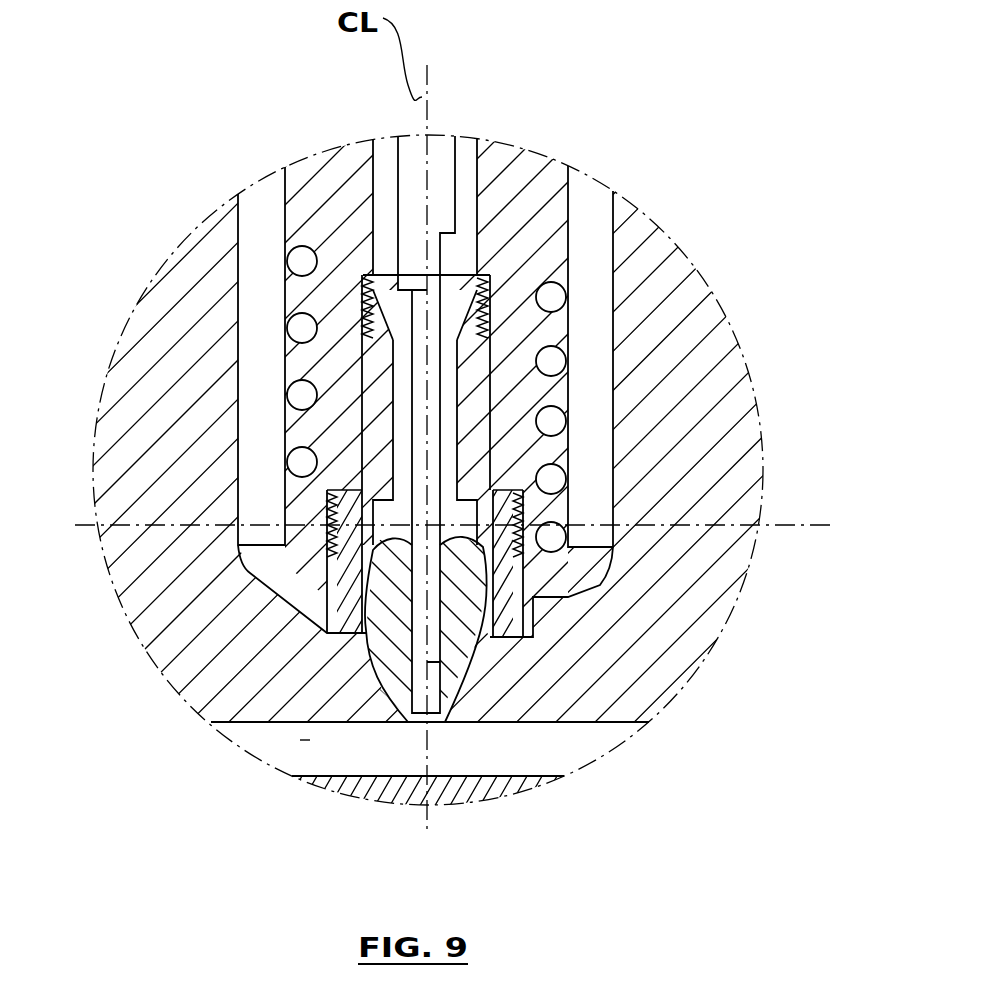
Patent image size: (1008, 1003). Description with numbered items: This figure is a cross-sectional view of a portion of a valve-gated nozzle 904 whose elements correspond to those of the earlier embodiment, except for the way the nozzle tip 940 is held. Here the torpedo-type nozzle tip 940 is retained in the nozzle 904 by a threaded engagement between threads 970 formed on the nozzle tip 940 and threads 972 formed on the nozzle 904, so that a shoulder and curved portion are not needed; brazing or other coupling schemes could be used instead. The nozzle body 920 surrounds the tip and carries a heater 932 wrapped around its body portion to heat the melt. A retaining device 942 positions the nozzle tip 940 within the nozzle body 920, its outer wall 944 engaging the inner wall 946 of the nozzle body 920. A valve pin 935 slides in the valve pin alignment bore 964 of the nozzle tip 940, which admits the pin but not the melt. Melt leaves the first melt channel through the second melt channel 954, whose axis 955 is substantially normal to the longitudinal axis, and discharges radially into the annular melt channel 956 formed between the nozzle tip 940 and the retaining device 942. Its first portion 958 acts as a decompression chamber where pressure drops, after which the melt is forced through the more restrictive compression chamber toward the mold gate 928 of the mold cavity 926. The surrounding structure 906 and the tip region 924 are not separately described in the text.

The nozzle 904 is at (580, 188).
The lower body 906 is at (657, 687).
The nozzle body 920 is at (530, 162).
The nozzle tip 924 is at (375, 690).
The mold cavity 926 is at (590, 748).
The mold gate 928 is at (420, 723).
The heater 932 is at (563, 297).
The valve pin 935 is at (438, 153).
The nozzle tip 940 is at (472, 390).
The retaining device 942 is at (530, 637).
The outer wall of retaining device 944 is at (327, 523).
The inner wall of nozzle body 946 is at (398, 540).
The second melt channel 954 is at (190, 617).
The axis of second melt channel 955 is at (830, 527).
The annular melt channel 956 is at (495, 582).
The first portion of annular melt channel 958 is at (547, 537).
The valve pin alignment bore 964 is at (447, 363).
The threads on nozzle tip 970 is at (297, 263).
The threads on nozzle 972 is at (360, 287).